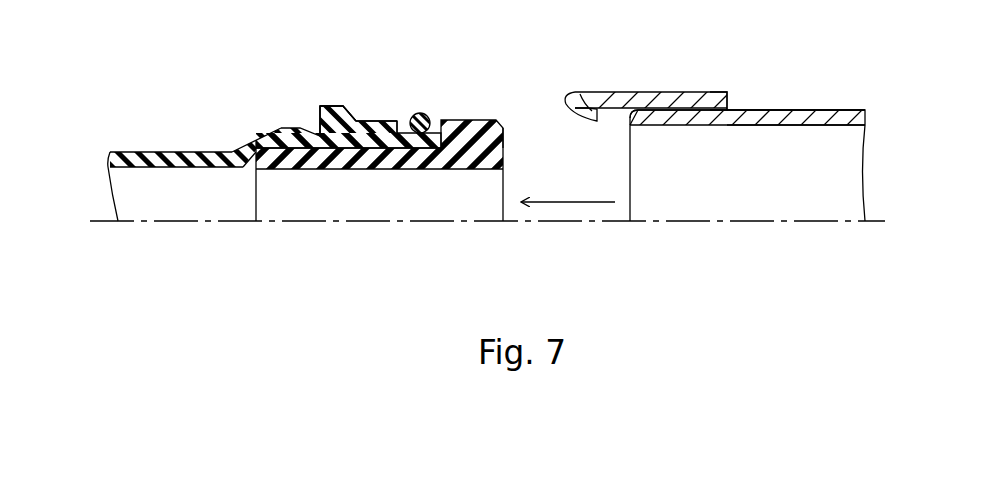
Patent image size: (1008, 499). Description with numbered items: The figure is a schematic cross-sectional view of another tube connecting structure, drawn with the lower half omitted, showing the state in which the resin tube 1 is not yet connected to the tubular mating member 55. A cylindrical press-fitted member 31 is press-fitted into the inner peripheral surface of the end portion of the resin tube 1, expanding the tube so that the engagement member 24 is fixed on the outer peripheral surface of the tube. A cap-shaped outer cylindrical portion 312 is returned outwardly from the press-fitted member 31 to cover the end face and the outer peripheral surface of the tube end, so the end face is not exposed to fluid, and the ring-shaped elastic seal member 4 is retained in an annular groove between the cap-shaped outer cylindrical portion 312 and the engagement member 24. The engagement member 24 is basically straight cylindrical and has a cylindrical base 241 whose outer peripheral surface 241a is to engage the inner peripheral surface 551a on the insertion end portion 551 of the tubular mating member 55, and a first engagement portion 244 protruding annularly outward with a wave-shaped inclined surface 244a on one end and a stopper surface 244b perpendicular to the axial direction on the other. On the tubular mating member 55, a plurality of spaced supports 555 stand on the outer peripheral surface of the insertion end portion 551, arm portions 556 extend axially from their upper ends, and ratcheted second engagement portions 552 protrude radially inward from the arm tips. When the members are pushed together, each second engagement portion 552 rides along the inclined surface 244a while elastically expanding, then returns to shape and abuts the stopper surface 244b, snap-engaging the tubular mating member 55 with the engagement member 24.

The resin tube 1 is at (153, 151).
The engagement member 24 is at (362, 113).
The cylindrical base 241 is at (370, 121).
The outer peripheral surface 241a is at (382, 120).
The first engagement portion 244 is at (325, 103).
The inclined surface 244a is at (332, 108).
The stopper surface 244b is at (318, 110).
The ring-shaped elastic seal member 4 is at (428, 113).
The press-fitted member 31 is at (355, 172).
The cap-shaped outer cylindrical portion 312 is at (472, 128).
The tubular mating member 55 is at (801, 109).
The insertion end portion 551 is at (680, 118).
The inner peripheral surface 551a is at (767, 127).
The second engagement portion 552 is at (578, 92).
The support 555 is at (712, 100).
The arm portion 556 is at (658, 92).